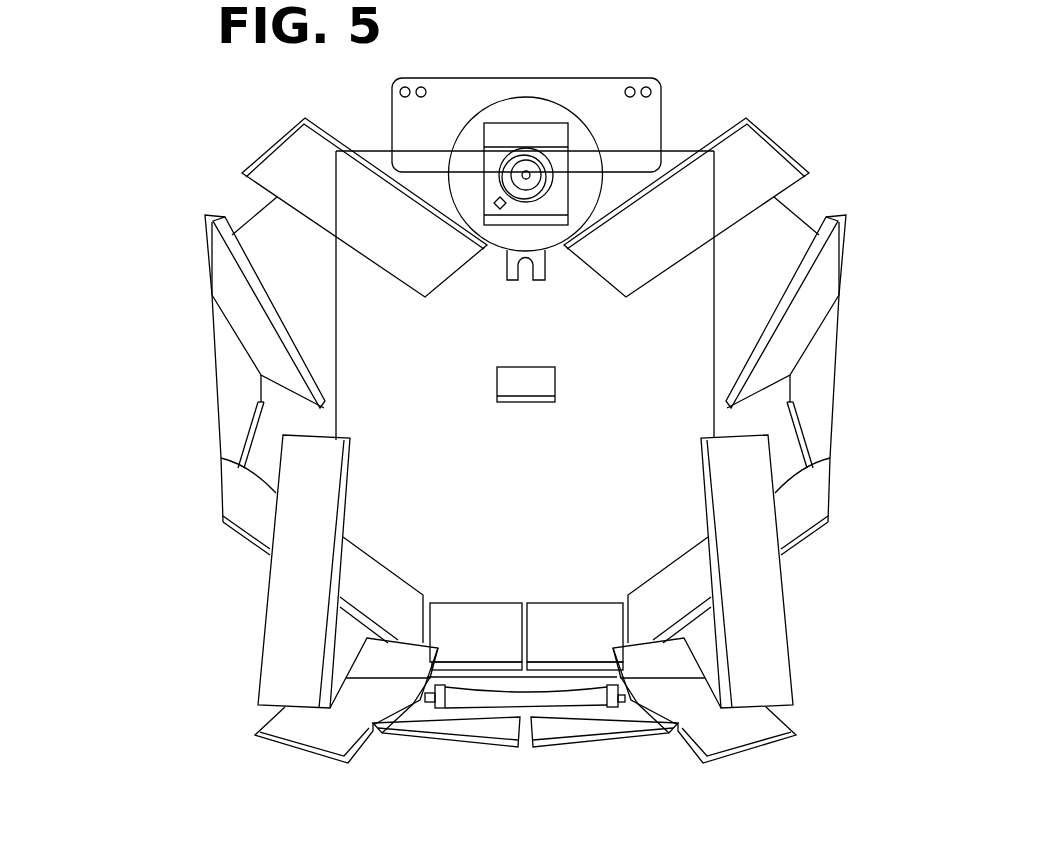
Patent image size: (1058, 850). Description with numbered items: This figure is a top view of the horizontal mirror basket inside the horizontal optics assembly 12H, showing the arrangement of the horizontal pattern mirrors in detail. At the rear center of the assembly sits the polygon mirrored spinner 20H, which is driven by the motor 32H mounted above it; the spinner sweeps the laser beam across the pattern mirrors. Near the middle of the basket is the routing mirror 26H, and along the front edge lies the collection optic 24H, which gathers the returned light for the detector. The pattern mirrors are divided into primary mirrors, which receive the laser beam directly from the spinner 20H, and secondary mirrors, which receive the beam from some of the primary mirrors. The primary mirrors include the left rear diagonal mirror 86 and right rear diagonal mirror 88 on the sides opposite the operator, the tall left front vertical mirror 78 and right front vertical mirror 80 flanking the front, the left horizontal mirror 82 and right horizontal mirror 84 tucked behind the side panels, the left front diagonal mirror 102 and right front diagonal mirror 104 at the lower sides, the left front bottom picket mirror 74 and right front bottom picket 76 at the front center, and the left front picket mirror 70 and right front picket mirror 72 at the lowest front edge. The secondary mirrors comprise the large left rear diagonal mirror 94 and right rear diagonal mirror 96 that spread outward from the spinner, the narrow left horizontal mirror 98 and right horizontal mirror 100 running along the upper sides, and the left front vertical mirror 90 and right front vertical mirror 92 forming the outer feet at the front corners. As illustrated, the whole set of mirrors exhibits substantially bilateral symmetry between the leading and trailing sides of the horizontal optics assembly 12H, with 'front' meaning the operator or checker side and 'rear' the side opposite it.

The horizontal optics assembly 12H is at (150, 133).
The polygon mirrored spinner 20H is at (527, 123).
The motor 32H is at (577, 128).
The routing mirror 26H is at (526, 388).
The collection optic 24H is at (566, 697).
The left front picket mirror 70 is at (463, 727).
The right front picket mirror 72 is at (555, 732).
The left front bottom picket mirror 74 is at (470, 617).
The right front bottom picket 76 is at (565, 612).
The left front vertical mirror 78 is at (280, 617).
The right front vertical mirror 80 is at (770, 640).
The left horizontal mirror 82 is at (235, 388).
The right horizontal mirror 84 is at (822, 400).
The left rear diagonal mirror 86 is at (222, 274).
The right rear diagonal mirror 88 is at (830, 277).
The left front vertical mirror 90 is at (318, 735).
The right front vertical mirror 92 is at (733, 735).
The left rear diagonal mirror 94 is at (276, 142).
The right rear diagonal mirror 96 is at (768, 158).
The left horizontal mirror 98 is at (257, 228).
The right horizontal mirror 100 is at (790, 218).
The left front diagonal mirror 102 is at (240, 492).
The right front diagonal mirror 104 is at (817, 495).